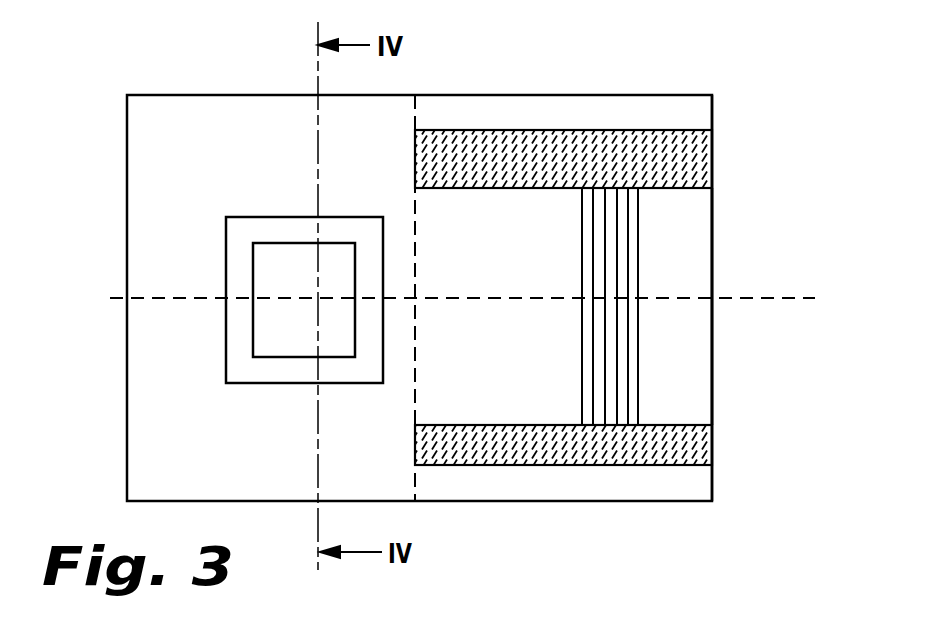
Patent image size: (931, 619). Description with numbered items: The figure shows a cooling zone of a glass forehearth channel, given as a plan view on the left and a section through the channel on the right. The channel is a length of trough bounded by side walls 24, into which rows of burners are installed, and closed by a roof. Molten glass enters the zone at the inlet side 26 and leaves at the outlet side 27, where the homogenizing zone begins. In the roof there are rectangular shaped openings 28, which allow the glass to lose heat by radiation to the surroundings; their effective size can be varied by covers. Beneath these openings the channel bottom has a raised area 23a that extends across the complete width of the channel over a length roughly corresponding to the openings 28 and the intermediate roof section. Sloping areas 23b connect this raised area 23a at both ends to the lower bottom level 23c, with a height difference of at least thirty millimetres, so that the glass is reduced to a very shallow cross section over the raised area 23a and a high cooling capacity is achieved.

The raised area 23a is at (525, 278).
The sloping areas 23b is at (640, 182).
The lower bottom level 23c is at (688, 258).
The side walls 24 is at (634, 108).
The inlet side 26 is at (120, 383).
The outlet side 27 is at (722, 351).
The rectangular shaped openings 28 is at (319, 342).